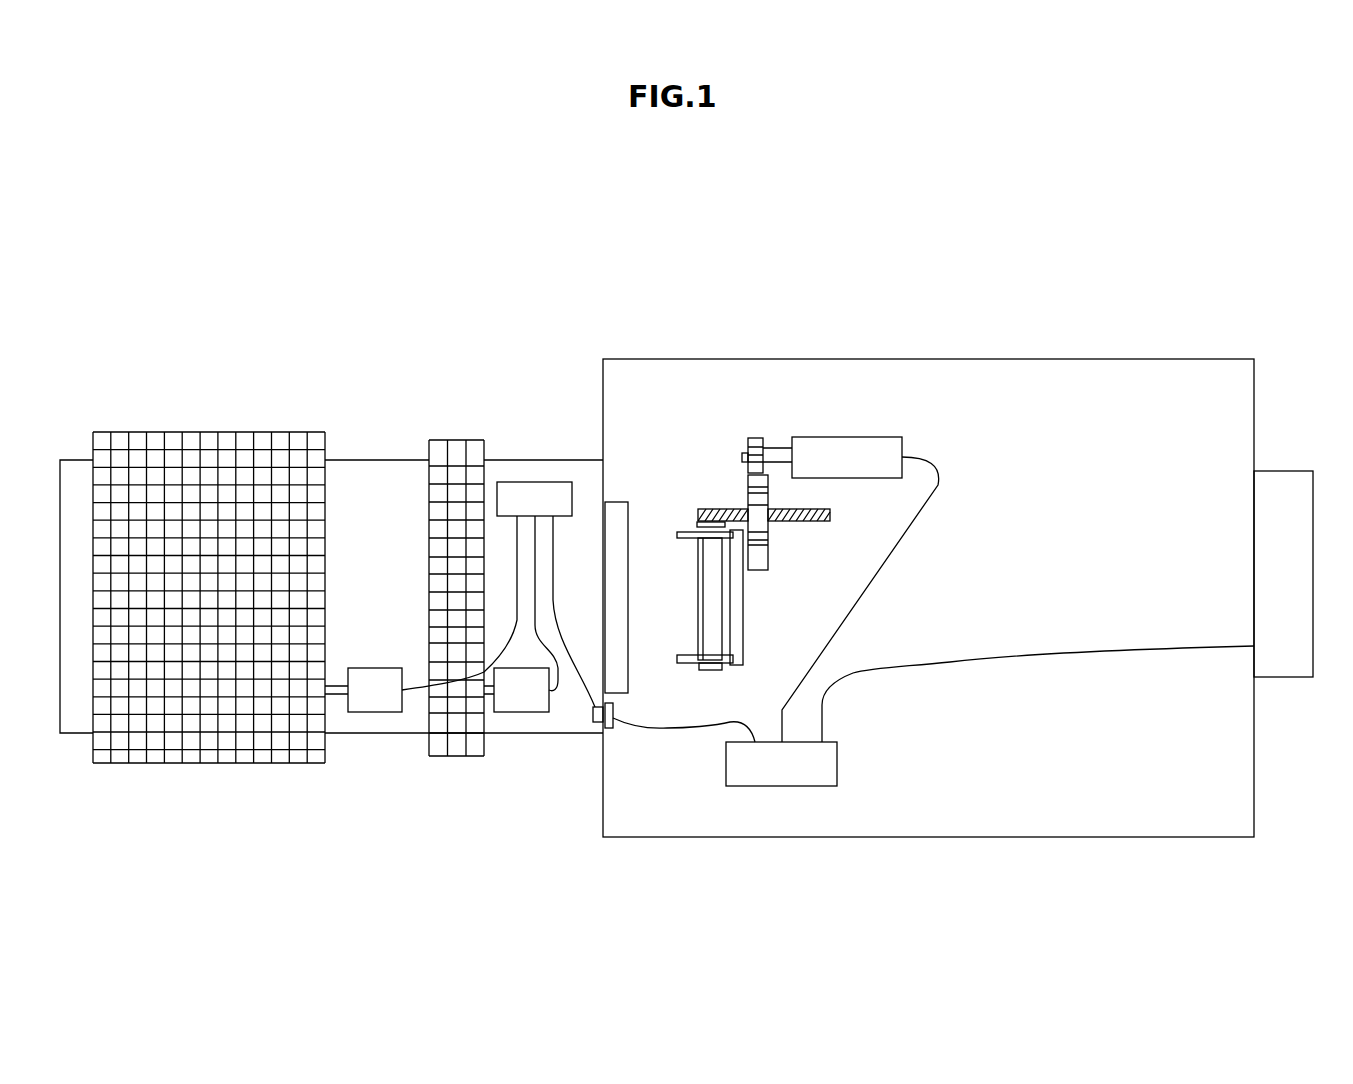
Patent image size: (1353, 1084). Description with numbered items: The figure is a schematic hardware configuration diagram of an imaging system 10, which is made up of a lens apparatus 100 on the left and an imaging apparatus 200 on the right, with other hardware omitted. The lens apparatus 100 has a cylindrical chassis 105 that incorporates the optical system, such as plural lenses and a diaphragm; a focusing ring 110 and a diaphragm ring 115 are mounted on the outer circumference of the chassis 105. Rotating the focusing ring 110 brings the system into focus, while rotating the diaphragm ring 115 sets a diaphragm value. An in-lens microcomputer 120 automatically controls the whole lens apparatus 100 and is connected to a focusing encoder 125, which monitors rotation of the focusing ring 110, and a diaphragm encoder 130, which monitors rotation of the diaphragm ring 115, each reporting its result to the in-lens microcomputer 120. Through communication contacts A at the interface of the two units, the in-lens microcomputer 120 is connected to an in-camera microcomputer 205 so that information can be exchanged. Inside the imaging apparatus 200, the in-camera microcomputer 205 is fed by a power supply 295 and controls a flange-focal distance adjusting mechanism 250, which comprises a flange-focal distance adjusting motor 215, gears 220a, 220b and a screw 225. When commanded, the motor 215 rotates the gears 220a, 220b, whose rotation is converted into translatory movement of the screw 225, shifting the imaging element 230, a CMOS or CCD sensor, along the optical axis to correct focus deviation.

The imaging system 10 is at (627, 267).
The lens apparatus 100 is at (243, 388).
The focusing ring 110 is at (135, 432).
The chassis 105 is at (380, 460).
The diaphragm ring 115 is at (462, 440).
The in-lens microcomputer 120 is at (538, 482).
The focusing encoder 125 is at (372, 712).
The diaphragm encoder 130 is at (520, 712).
The communication contacts A is at (608, 724).
The imaging apparatus 200 is at (922, 342).
The in-camera microcomputer 205 is at (782, 790).
The flange-focal distance adjusting motor 215 is at (902, 440).
The flange-focal distance adjusting mechanism 250 is at (900, 428).
The gear 220a is at (747, 440).
The gear 220b is at (747, 487).
The screw 225 is at (812, 522).
The imaging element 230 is at (698, 597).
The power supply 295 is at (1284, 471).